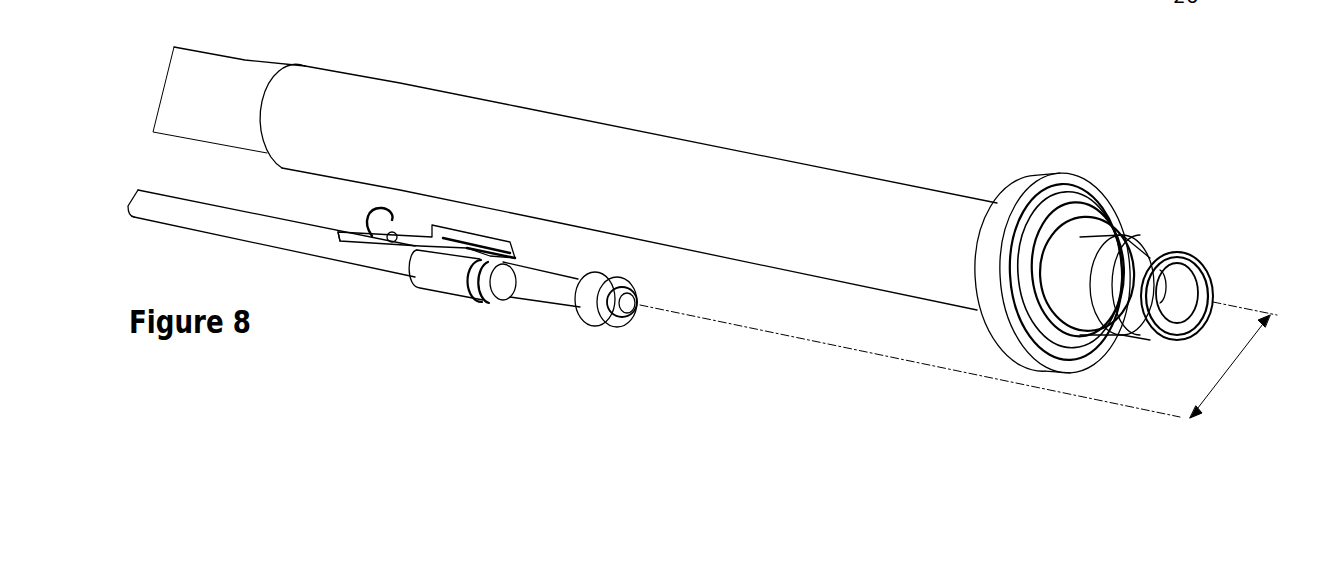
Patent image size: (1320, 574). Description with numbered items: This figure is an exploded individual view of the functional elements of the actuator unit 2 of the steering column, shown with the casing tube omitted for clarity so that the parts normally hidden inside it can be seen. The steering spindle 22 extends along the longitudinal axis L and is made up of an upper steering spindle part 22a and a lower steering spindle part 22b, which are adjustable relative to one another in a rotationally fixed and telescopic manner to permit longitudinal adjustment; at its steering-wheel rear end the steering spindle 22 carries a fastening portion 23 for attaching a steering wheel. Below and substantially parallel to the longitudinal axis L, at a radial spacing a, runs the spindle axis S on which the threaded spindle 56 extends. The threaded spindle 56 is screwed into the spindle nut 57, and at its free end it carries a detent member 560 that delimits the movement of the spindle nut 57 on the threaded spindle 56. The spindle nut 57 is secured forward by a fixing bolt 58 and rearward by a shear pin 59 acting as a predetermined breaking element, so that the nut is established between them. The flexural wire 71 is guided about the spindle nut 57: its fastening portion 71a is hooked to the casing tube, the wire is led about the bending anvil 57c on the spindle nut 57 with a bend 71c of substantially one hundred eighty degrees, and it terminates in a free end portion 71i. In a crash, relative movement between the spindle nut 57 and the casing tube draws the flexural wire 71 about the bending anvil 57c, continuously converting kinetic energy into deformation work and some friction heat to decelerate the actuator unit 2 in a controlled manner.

The actuator unit 2 is at (533, 78).
The steering spindle 22 is at (1078, 257).
The upper steering spindle part 22a is at (640, 173).
The lower steering spindle part 22b is at (217, 75).
The fastening portion 23 is at (1150, 258).
The threaded spindle 56 is at (200, 222).
The detent member 560 is at (627, 323).
The spindle nut 57 is at (462, 275).
The bending anvil 57c is at (517, 293).
The fixing bolt 58 is at (418, 250).
The shear pin 59 is at (490, 310).
The flexural wire 71 is at (380, 238).
The fastening portion 71a is at (363, 228).
The bend 71c is at (492, 250).
The end portion 71i is at (350, 230).
The longitudinal axis L is at (1230, 304).
The spindle axis S is at (1150, 413).
The spacing a is at (1226, 377).